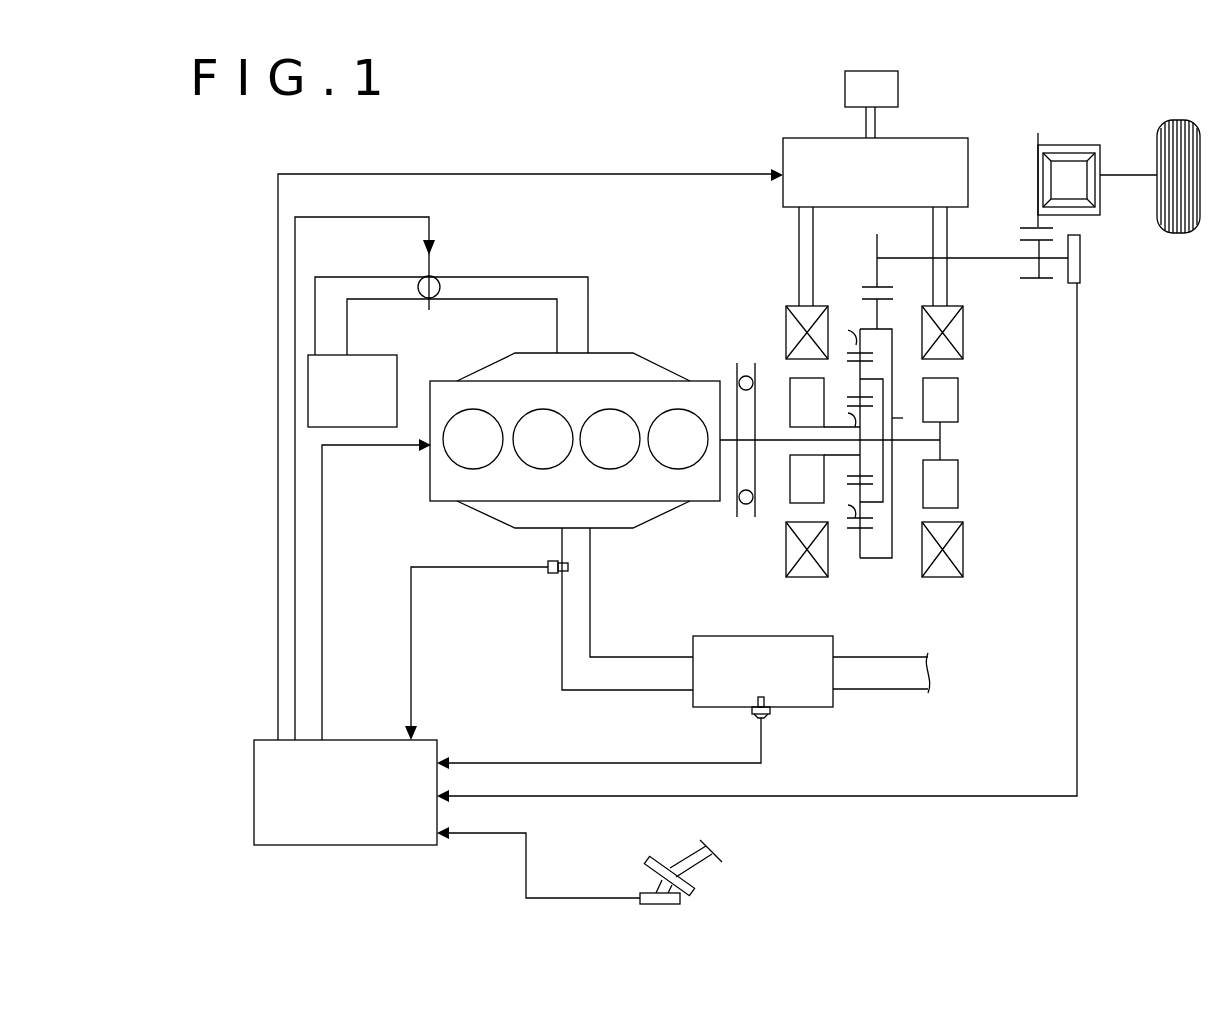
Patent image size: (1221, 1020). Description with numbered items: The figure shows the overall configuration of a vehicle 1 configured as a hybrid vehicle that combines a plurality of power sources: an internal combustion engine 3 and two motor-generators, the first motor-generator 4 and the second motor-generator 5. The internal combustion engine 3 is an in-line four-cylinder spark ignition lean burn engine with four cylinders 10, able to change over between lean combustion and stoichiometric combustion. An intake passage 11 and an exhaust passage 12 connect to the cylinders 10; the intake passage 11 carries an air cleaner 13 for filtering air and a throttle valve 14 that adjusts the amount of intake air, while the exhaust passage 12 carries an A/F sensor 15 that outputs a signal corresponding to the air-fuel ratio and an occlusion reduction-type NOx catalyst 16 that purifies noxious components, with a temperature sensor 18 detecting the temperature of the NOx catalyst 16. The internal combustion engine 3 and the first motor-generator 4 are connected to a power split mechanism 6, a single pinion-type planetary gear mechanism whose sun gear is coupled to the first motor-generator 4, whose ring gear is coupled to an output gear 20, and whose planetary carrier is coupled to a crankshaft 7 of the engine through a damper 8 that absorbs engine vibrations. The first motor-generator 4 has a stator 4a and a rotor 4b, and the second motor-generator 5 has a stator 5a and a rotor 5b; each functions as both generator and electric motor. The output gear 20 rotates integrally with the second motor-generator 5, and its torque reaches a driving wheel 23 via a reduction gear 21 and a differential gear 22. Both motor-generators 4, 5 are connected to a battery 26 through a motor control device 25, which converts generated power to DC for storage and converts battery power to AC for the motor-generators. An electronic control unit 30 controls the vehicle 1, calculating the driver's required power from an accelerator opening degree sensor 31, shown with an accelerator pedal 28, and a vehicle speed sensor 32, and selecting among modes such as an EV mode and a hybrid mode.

The vehicle 1 is at (596, 81).
The internal combustion engine 3 is at (562, 394).
The first motor-generator 4 is at (789, 392).
The stator 4a is at (786, 348).
The rotor 4b is at (790, 505).
The second motor-generator 5 is at (977, 400).
The stator 5a is at (965, 352).
The rotor 5b is at (958, 467).
The power split mechanism 6 is at (857, 325).
The crankshaft 7 is at (734, 375).
The damper 8 is at (735, 517).
The cylinders 10 is at (484, 466).
The intake passage 11 is at (523, 277).
The exhaust passage 12 is at (595, 555).
The air cleaner 13 is at (370, 355).
The throttle valve 14 is at (420, 282).
The A/F sensor 15 is at (555, 575).
The NOx catalyst 16 is at (693, 637).
The temperature sensor 18 is at (770, 712).
The output gear 20 is at (878, 314).
The reduction gear 21 is at (978, 264).
The differential gear 22 is at (1065, 145).
The driving wheel 23 is at (1178, 120).
The motor control device 25 is at (783, 148).
The battery 26 is at (845, 90).
The accelerator pedal 28 is at (650, 862).
The electronic control unit 30 is at (360, 740).
The accelerator opening degree sensor 31 is at (640, 893).
The vehicle speed sensor 32 is at (1082, 258).